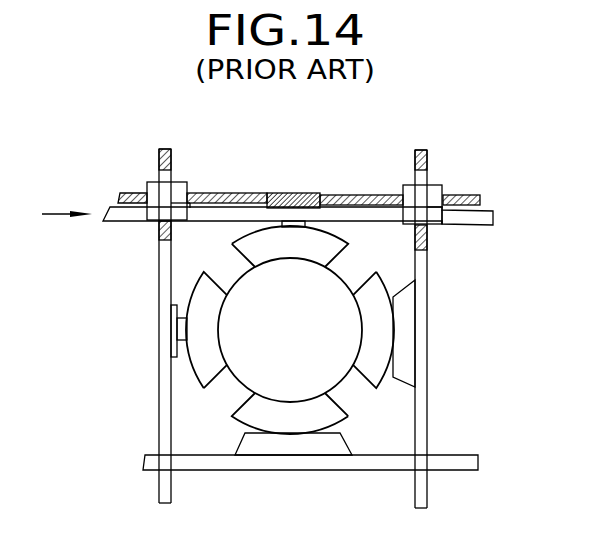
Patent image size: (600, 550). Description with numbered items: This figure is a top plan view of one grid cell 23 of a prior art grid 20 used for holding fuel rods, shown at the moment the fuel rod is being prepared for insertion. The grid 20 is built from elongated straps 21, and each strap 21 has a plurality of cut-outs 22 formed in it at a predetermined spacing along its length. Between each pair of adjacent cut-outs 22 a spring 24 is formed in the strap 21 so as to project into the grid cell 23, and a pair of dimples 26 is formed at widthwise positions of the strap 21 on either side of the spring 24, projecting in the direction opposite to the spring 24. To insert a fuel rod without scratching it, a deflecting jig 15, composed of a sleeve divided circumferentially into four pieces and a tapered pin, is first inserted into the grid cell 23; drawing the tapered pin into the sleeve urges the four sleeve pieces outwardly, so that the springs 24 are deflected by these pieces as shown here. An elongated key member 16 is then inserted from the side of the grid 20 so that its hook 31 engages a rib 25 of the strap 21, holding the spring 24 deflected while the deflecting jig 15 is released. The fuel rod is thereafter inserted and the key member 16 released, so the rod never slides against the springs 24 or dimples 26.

The deflecting jig 15 is at (394, 283).
The key member 16 is at (490, 227).
The grid 20 is at (450, 163).
The strap 21 is at (160, 374).
The cut-out 22 is at (172, 172).
The grid cell 23 is at (182, 408).
The spring 24 is at (295, 193).
The rib 25 is at (237, 195).
The dimple 26 is at (412, 336).
The hook 31 is at (153, 182).